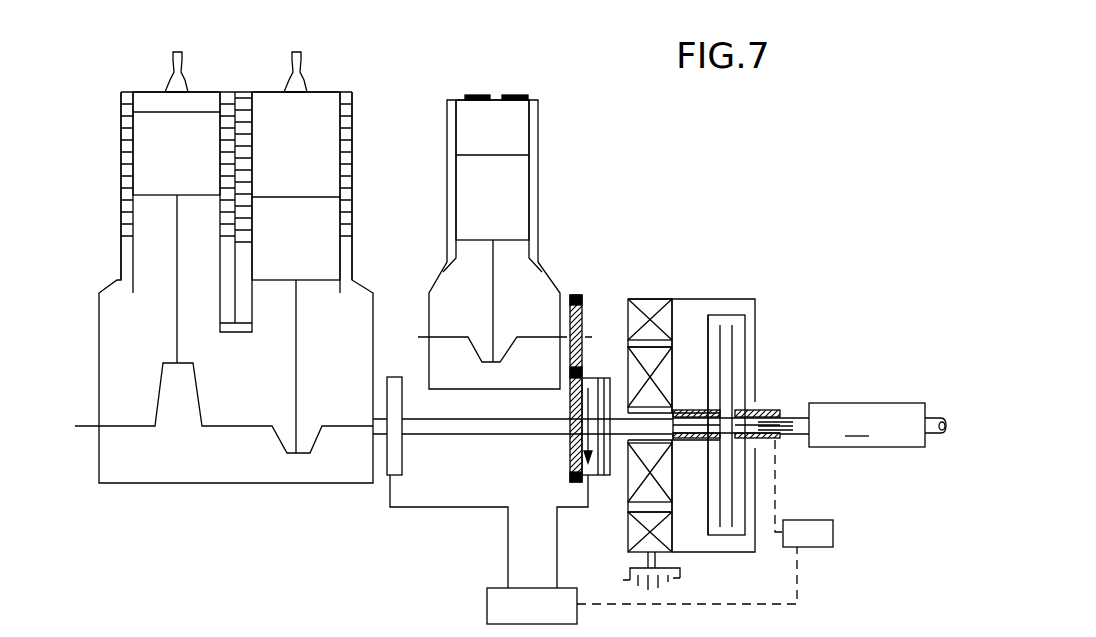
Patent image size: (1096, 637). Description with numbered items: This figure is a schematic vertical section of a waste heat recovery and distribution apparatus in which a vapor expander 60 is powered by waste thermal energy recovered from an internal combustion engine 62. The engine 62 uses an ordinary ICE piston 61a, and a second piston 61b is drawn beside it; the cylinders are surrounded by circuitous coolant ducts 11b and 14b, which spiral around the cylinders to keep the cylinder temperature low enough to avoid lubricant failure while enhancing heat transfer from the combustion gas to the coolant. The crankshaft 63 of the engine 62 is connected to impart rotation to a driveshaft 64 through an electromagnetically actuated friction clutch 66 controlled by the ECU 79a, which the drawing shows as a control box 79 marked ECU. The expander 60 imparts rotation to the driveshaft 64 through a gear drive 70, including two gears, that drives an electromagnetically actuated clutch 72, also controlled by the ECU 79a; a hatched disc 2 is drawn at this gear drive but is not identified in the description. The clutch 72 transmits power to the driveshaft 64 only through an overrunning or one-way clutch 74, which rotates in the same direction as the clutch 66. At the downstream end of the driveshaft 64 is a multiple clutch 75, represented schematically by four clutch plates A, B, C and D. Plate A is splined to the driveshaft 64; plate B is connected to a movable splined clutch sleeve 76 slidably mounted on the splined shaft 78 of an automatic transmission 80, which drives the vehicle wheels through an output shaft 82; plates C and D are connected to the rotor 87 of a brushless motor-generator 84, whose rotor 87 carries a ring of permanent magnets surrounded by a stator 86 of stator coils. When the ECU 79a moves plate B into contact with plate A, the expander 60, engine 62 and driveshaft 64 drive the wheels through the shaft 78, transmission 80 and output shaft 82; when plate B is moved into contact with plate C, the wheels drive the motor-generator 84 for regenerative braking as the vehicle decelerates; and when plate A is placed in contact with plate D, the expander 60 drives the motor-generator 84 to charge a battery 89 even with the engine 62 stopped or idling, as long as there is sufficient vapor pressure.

The brake disc 2 is at (570, 407).
The circuitous coolant duct 11b is at (128, 180).
The circuitous coolant duct 14b is at (345, 215).
The vapor expander 60 is at (538, 157).
The ICE piston 61a is at (182, 145).
The second piston 61b is at (303, 197).
The internal combustion engine 62 is at (355, 154).
The crankshaft 63 is at (318, 427).
The driveshaft 64 is at (508, 427).
The electromagnetically actuated friction clutch 66 is at (390, 373).
The gear drive 70 is at (506, 405).
The electromagnetically actuated clutch 72 is at (590, 476).
The overrunning or one-way clutch 74 is at (610, 476).
The multiple clutch 75 is at (740, 537).
The movable splined clutch sleeve 76 is at (762, 395).
The splined shaft 78 is at (806, 436).
The ECU 79 is at (487, 600).
The ECU 79a is at (818, 530).
The automatic transmission 80 is at (867, 425).
The output shaft 82 is at (937, 403).
The brushless motor-generator 84 is at (698, 429).
The stator 86 is at (652, 298).
The rotor 87 is at (667, 458).
The battery 89 is at (630, 580).
The clutch plate A is at (720, 350).
The clutch plate B is at (732, 375).
The clutch plate C is at (748, 342).
The clutch plate D is at (708, 325).